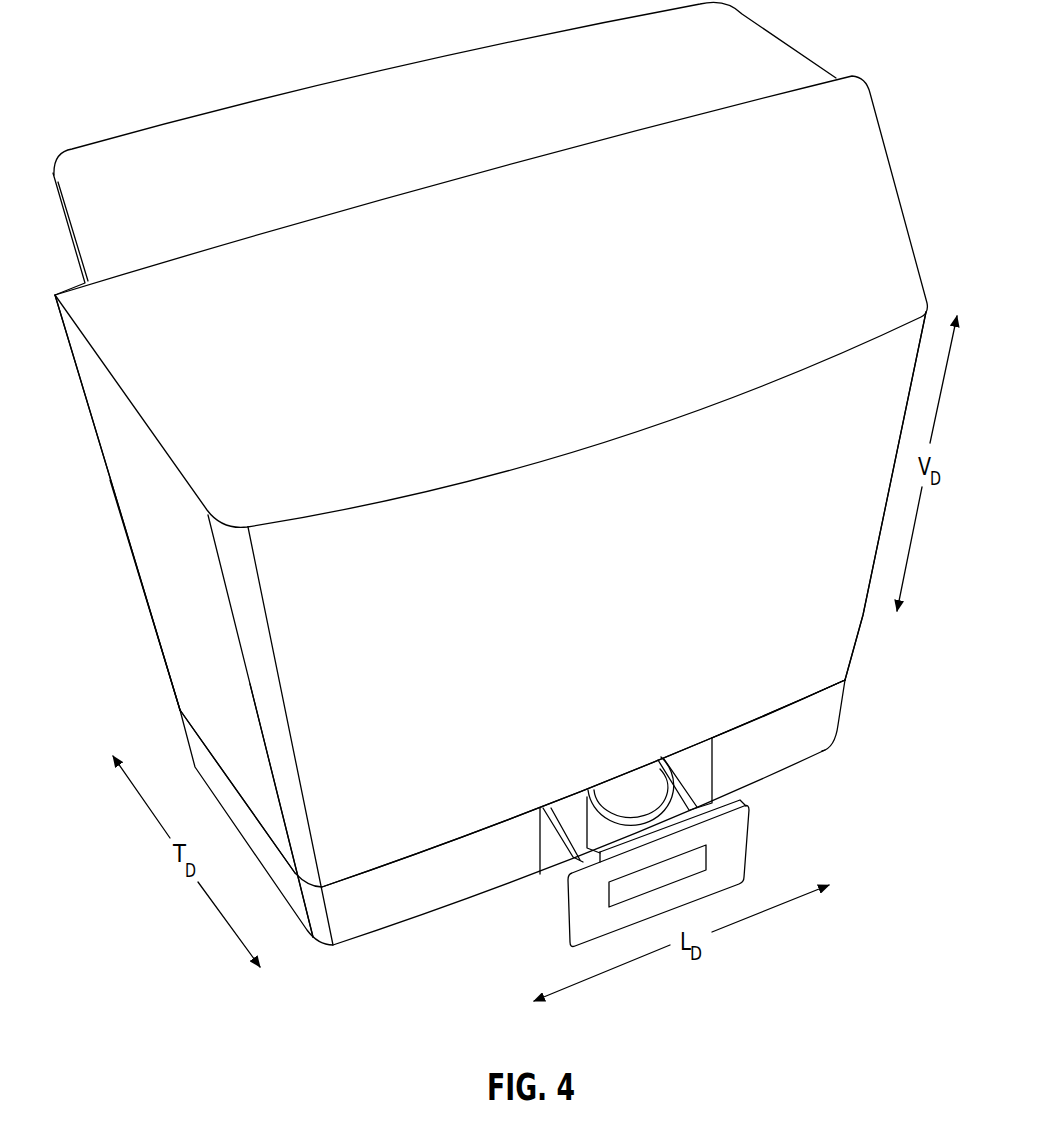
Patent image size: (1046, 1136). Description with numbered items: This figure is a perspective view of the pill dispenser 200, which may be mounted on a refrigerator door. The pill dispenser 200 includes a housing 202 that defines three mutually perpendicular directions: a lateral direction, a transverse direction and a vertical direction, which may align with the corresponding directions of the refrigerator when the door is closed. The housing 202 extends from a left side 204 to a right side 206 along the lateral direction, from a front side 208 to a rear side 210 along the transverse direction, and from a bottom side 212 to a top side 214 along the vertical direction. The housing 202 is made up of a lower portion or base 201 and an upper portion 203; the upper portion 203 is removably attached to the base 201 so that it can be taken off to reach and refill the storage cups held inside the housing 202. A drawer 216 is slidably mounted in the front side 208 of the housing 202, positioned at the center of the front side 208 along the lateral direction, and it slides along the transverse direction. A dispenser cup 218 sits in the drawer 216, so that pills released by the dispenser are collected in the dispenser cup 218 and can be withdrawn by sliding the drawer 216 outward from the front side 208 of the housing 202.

The pill dispenser 200 is at (112, 78).
The base 201 is at (780, 750).
The housing 202 is at (126, 658).
The upper portion 203 is at (141, 488).
The left side 204 is at (194, 693).
The right side 206 is at (864, 617).
The front side 208 is at (642, 575).
The rear side 210 is at (136, 573).
The bottom side 212 is at (418, 924).
The top side 214 is at (533, 324).
The drawer 216 is at (558, 876).
The dispenser cup 218 is at (587, 799).